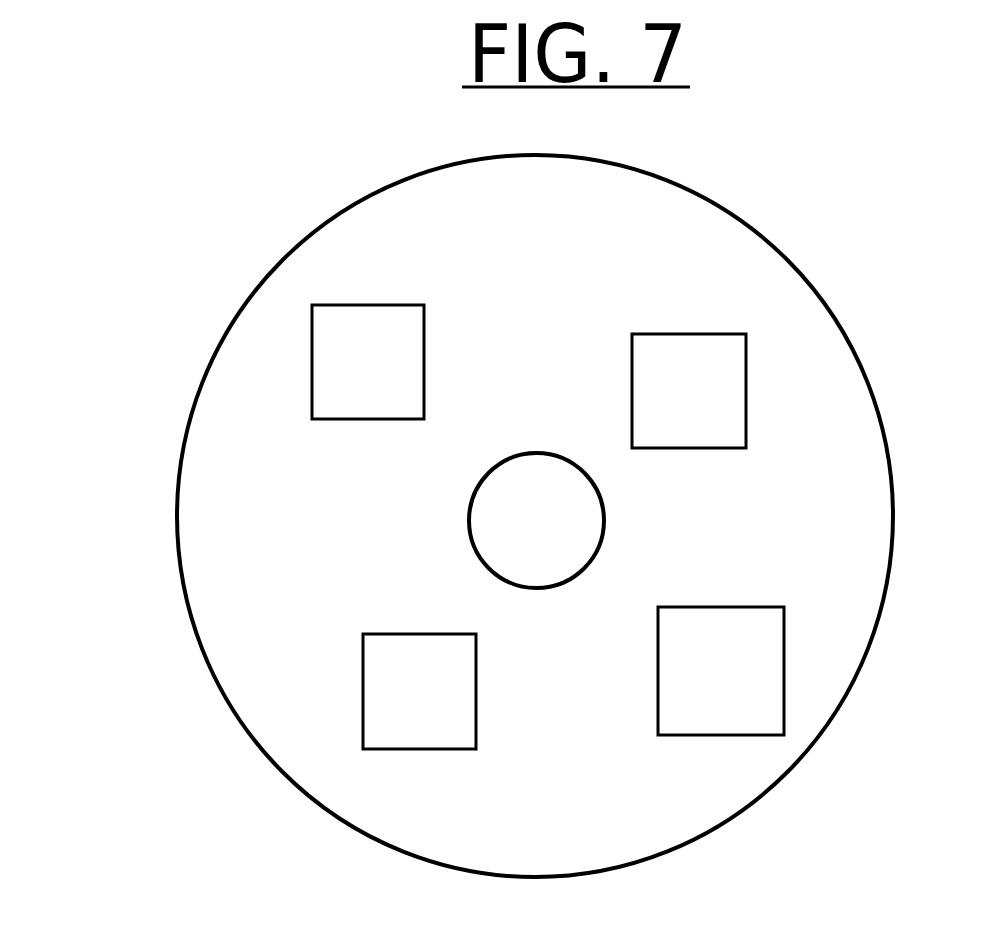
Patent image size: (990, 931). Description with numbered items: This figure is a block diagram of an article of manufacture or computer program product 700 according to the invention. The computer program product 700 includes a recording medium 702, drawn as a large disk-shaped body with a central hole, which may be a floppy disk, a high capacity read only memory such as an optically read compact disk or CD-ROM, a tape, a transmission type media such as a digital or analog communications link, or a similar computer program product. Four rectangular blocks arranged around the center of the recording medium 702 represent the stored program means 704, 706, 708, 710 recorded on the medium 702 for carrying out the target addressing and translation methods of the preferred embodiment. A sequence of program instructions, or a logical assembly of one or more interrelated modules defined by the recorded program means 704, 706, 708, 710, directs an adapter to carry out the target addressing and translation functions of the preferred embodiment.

The computer program product 700 is at (554, 516).
The recording medium 702 is at (232, 301).
The program means 704 is at (689, 391).
The program means 706 is at (721, 671).
The program means 708 is at (419, 691).
The program means 710 is at (368, 362).